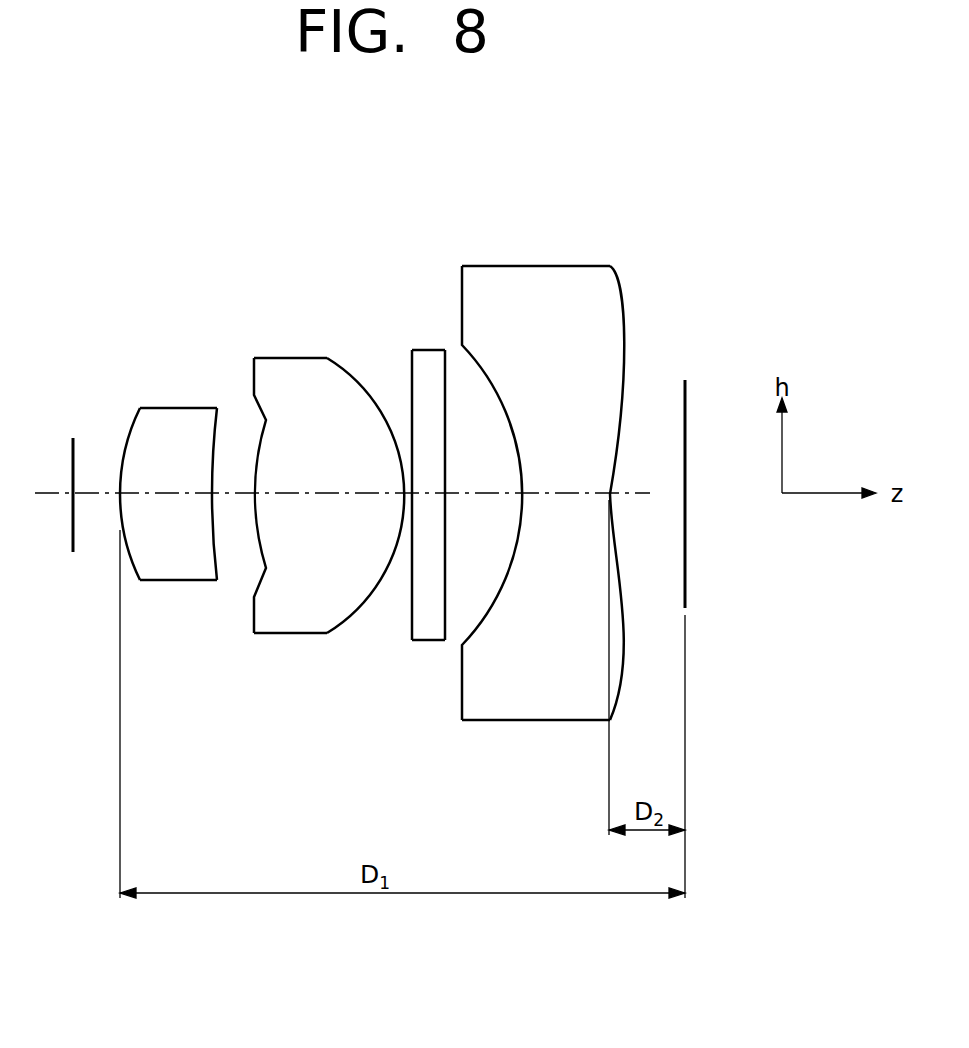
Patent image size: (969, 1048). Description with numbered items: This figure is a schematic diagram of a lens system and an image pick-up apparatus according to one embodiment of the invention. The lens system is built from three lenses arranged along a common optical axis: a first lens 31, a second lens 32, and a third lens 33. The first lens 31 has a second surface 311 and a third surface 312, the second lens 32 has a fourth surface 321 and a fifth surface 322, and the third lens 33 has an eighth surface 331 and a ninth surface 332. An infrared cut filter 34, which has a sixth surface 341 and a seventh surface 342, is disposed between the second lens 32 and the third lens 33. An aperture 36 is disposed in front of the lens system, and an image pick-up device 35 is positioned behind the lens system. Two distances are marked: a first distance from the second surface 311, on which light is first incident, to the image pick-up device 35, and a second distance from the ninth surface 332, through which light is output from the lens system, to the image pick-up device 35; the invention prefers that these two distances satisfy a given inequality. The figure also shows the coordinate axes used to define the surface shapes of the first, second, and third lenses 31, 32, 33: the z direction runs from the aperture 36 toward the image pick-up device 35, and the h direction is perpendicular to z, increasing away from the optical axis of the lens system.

The first lens 31 is at (163, 512).
The second surface 311 is at (133, 412).
The third surface 312 is at (224, 410).
The second lens 32 is at (313, 493).
The fourth surface 321 is at (253, 410).
The fifth surface 322 is at (358, 380).
The third lens 33 is at (544, 478).
The eighth surface 331 is at (454, 300).
The ninth surface 332 is at (633, 293).
The infrared cut filter 34 is at (412, 461).
The sixth surface 341 is at (402, 358).
The seventh surface 342 is at (450, 358).
The image pick-up device 35 is at (686, 580).
The aperture 36 is at (73, 545).